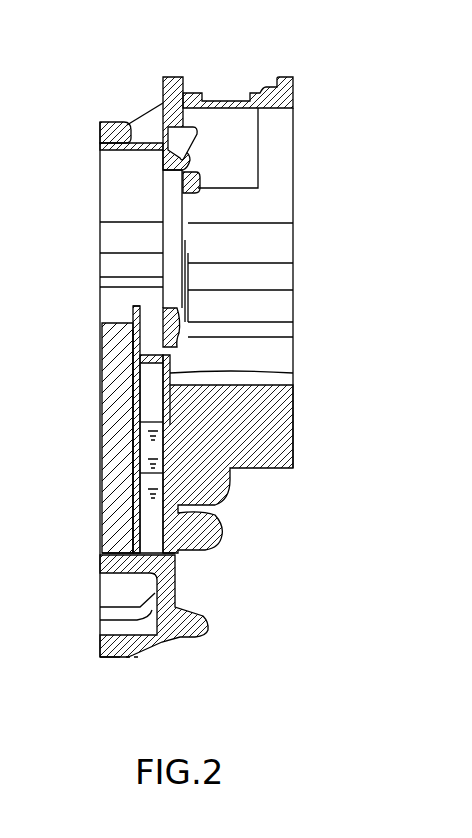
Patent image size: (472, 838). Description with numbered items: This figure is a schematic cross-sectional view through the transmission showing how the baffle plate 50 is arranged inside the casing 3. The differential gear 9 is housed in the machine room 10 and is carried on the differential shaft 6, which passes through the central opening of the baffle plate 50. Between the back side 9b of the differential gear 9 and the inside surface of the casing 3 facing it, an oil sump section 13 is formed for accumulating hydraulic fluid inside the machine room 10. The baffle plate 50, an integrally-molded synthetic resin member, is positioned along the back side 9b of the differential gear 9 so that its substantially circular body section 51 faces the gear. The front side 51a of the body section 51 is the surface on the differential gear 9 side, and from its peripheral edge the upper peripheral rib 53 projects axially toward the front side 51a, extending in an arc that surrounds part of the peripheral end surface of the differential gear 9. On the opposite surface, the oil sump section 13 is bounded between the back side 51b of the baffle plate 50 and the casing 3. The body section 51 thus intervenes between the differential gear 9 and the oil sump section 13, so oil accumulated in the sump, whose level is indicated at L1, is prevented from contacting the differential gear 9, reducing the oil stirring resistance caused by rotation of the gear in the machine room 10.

The casing 3 is at (107, 123).
The machine room 10 is at (134, 270).
The differential gear 9 is at (114, 323).
The back side of the differential gear 9b is at (140, 322).
The baffle plate 50 is at (138, 305).
The upper peripheral rib 53 is at (148, 355).
The oil sump section 13 is at (150, 407).
The body section 51 is at (140, 513).
The front side of the body section 51a is at (135, 407).
The liquid level L1 is at (157, 448).
The back side of the baffle plate 51b is at (142, 473).
The differential shaft 6 is at (100, 562).